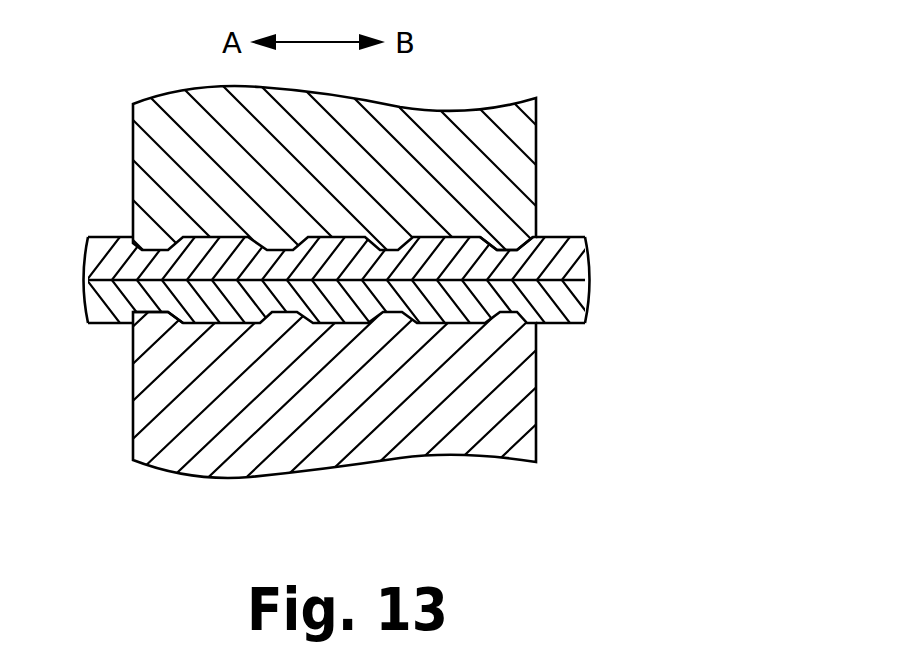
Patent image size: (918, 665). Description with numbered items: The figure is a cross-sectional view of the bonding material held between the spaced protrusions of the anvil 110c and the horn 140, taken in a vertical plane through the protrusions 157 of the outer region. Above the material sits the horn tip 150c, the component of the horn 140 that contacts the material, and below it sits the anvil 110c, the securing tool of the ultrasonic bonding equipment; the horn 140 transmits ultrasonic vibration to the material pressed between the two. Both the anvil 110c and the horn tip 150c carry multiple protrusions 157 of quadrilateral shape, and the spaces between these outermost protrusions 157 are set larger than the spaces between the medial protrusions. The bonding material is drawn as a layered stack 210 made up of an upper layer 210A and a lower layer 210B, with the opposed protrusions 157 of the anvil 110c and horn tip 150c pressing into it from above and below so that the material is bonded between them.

The horn tip 150c is at (510, 115).
The anvil 110c is at (330, 452).
The horn 140 is at (591, 88).
The protrusions of the outer region 157 is at (510, 249).
The intermediate layer 210 is at (720, 230).
The upper sub-layer of intermediate layer 210A is at (563, 263).
The lower sub-layer of intermediate layer 210B is at (563, 303).